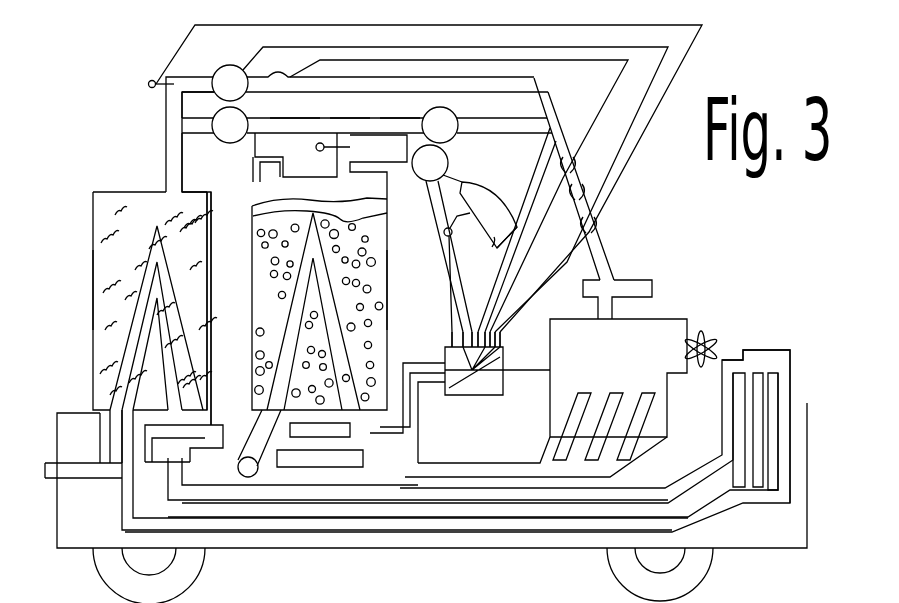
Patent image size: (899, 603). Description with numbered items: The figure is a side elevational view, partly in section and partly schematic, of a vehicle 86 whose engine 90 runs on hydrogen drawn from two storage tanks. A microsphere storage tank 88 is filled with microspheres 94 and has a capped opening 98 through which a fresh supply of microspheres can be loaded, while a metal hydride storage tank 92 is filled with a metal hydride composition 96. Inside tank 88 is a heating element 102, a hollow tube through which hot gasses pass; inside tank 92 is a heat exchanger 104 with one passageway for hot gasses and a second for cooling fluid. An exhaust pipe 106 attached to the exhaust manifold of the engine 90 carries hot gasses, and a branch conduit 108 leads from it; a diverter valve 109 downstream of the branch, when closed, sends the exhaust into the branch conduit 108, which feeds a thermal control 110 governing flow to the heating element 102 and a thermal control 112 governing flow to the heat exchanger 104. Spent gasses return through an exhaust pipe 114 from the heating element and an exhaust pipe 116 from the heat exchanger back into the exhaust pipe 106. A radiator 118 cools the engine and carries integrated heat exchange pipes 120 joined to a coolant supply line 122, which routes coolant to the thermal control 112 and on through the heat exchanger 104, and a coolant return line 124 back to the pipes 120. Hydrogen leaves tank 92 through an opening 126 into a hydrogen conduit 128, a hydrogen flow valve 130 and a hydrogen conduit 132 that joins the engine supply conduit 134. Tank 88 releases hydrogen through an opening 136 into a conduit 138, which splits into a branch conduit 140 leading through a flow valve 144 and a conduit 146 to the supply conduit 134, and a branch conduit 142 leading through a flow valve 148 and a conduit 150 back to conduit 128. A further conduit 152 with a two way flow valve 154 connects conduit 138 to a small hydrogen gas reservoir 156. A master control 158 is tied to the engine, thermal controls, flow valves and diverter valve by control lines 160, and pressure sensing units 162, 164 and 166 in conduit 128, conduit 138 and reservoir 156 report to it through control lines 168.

The vehicle 86 is at (797, 550).
The microsphere storage tank 88 is at (388, 284).
The engine 90 is at (672, 319).
The metal hydride storage tank 92 is at (95, 322).
The microspheres 94 is at (388, 276).
The metal hydride composition 96 is at (97, 243).
The opening 98 is at (253, 183).
The heating element 102 is at (350, 343).
The heat exchanger 104 is at (187, 337).
The exhaust pipe 106 is at (518, 468).
The branch conduit 108 is at (295, 520).
The diverter valve 109 is at (250, 478).
The thermal control 110 is at (363, 490).
The thermal control 112 is at (212, 376).
The exhaust pipe 114 is at (250, 413).
The exhaust pipe 116 is at (107, 436).
The radiator 118 is at (785, 350).
The heat exchange pipes 120 is at (763, 420).
The coolant supply line 122 is at (633, 487).
The coolant return line 124 is at (745, 512).
The opening 126 is at (163, 190).
The hydrogen conduit 128 is at (186, 78).
The hydrogen flow valve 130 is at (238, 67).
The hydrogen conduit 132 is at (429, 178).
The engine supply conduit 134 is at (612, 250).
The opening 136 is at (212, 228).
The conduit 138 is at (292, 164).
The branch conduit 140 is at (413, 128).
The branch conduit 142 is at (312, 126).
The flow valve 144 is at (458, 118).
The conduit 146 is at (510, 134).
The flow valve 148 is at (237, 144).
The conduit 150 is at (180, 108).
The conduit 152 is at (357, 104).
The two way flow valve 154 is at (451, 156).
The hydrogen gas reservoir 156 is at (497, 249).
The master control 158 is at (506, 396).
The control lines 160 is at (530, 335).
The pressure sensing unit 162 is at (148, 85).
The pressure sensing unit 164 is at (354, 149).
The pressure sensing unit 166 is at (455, 216).
The control lines 168 is at (540, 280).